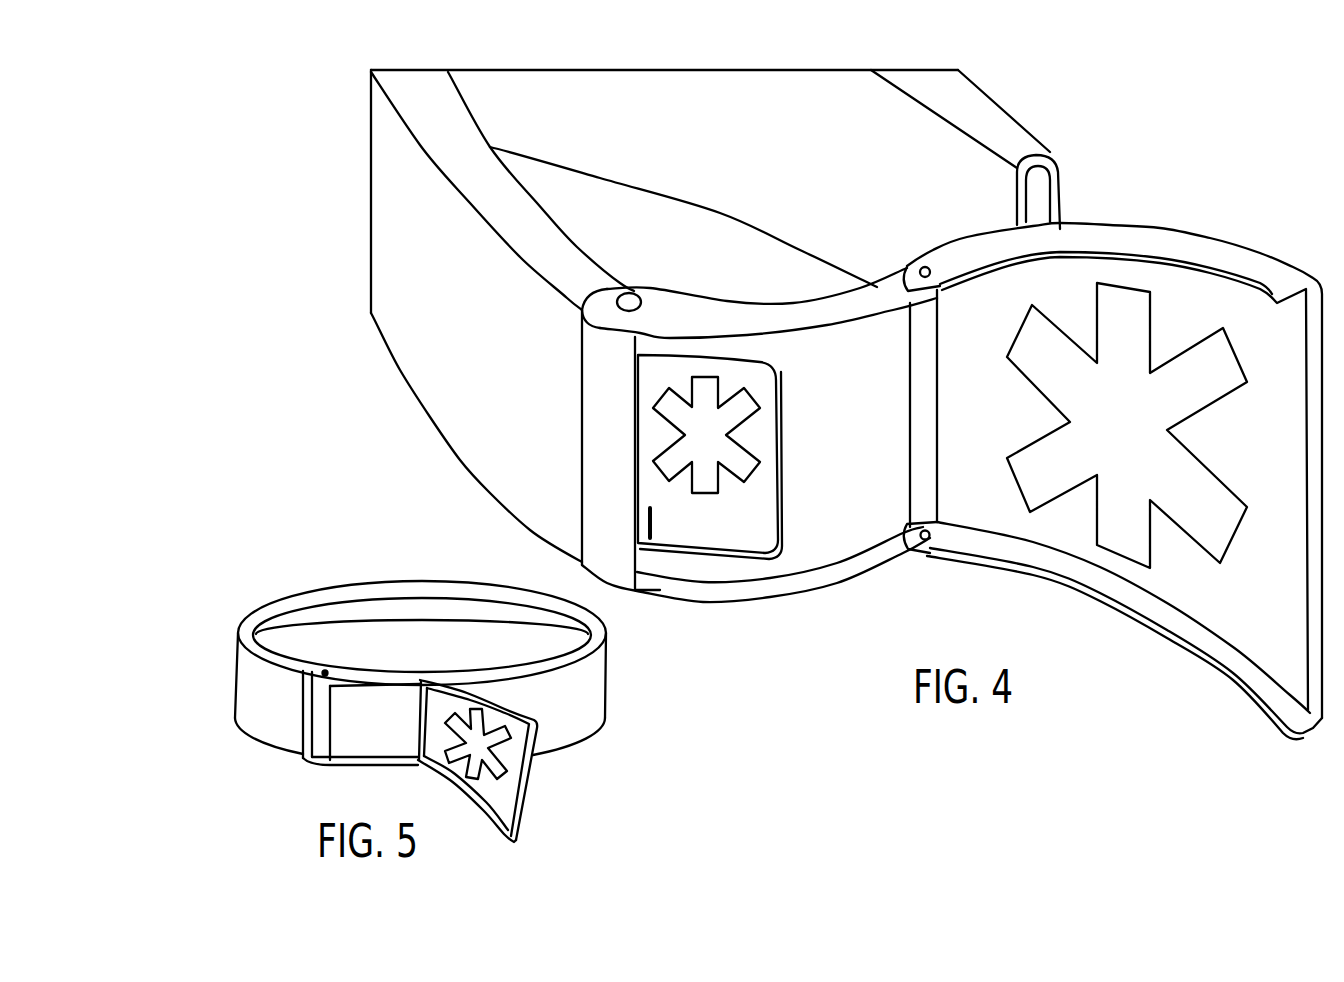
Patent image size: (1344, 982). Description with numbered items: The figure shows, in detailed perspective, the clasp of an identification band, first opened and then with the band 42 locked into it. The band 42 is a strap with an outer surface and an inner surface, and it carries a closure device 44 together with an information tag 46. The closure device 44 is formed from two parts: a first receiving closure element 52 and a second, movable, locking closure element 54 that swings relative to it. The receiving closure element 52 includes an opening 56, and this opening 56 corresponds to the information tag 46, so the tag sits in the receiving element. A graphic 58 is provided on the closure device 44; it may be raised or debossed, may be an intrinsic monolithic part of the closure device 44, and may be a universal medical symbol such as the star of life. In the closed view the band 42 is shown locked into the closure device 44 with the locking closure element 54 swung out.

In FIG. 4, the band 42 is at (477, 397).
In FIG. 5, the band 42 is at (378, 708).
In FIG. 4, the closure device 44 is at (790, 296).
In FIG. 5, the closure device 44 is at (530, 805).
In FIG. 4, the information tag 46 is at (800, 108).
In FIG. 4, the first receiving closure element 52 is at (850, 570).
In FIG. 4, the second, movable, locking closure element 54 is at (1222, 657).
In FIG. 4, the opening 56 is at (658, 346).
In FIG. 4, the graphic 58 is at (1193, 373).